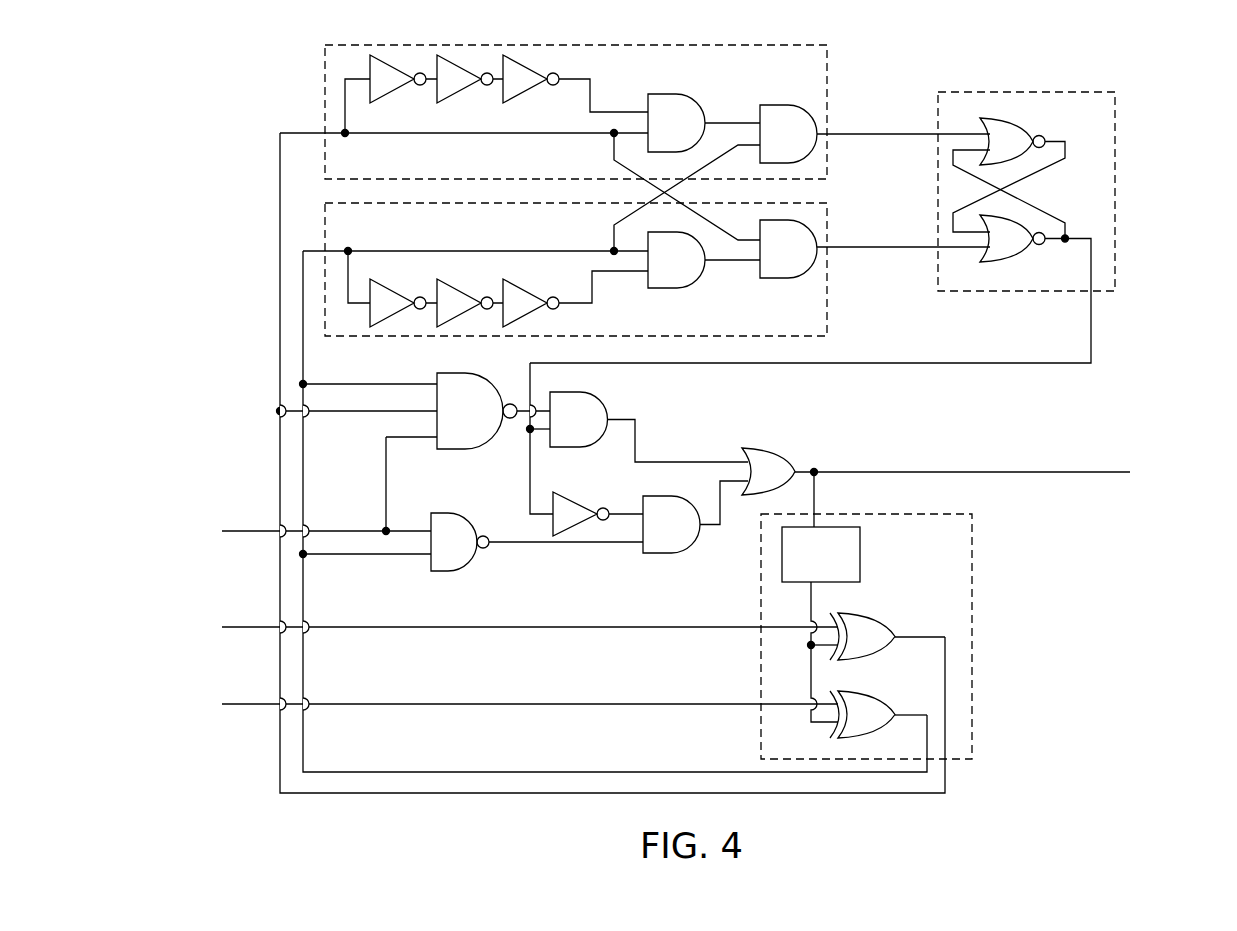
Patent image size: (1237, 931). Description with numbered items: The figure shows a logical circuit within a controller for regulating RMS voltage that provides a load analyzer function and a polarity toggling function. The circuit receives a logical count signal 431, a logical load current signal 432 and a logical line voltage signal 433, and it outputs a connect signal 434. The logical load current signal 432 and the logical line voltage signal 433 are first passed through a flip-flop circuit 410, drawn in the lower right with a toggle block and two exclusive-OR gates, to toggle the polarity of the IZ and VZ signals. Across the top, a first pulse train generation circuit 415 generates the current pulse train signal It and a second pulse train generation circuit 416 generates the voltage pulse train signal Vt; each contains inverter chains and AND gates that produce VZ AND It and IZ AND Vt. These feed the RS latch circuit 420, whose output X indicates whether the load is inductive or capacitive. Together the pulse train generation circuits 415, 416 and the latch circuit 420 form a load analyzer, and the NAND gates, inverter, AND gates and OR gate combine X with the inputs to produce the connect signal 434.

The first pulse train generation circuit 415 is at (325, 73).
The second pulse train generation circuit 416 is at (325, 228).
The RS latch circuit 420 is at (1115, 152).
The flip-flop circuit 410 is at (972, 620).
The logical count signal 431 is at (258, 532).
The logical load current signal 432 is at (258, 628).
The logical line voltage signal 433 is at (258, 706).
The connect signal 434 is at (1072, 472).